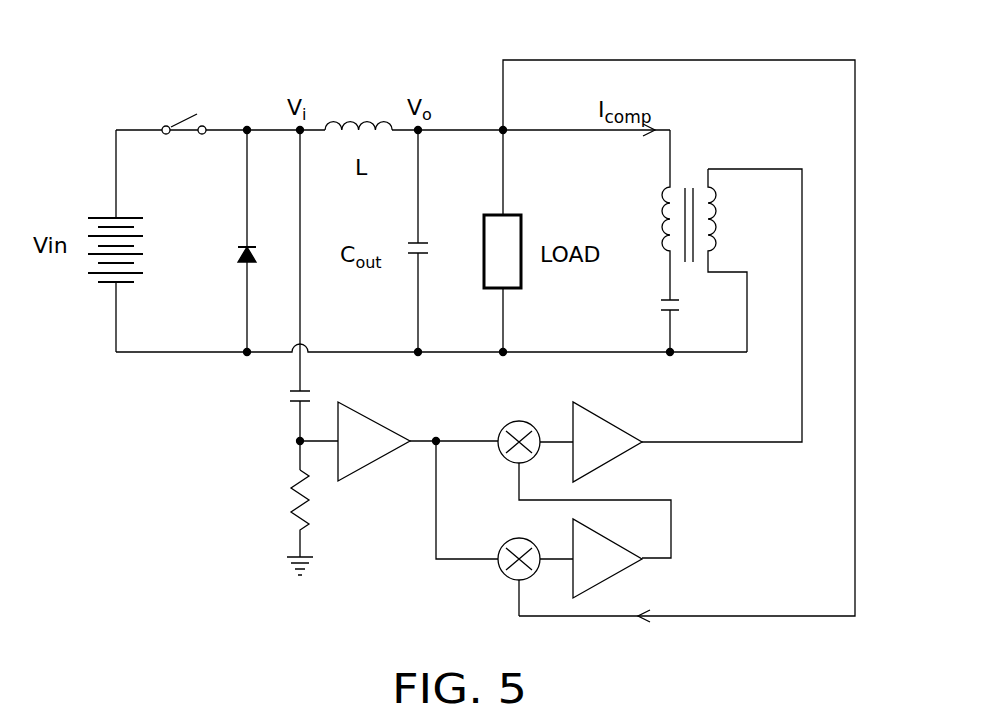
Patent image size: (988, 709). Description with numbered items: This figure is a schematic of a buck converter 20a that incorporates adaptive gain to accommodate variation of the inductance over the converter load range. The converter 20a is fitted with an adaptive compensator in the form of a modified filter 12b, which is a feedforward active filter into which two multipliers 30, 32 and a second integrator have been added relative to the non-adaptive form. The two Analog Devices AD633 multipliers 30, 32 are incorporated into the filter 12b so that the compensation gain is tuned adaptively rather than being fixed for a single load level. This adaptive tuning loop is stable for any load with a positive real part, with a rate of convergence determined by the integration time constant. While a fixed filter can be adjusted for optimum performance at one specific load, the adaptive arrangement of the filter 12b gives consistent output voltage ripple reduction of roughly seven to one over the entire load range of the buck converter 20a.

The buck converter 20a is at (805, 48).
The multiplier 30 is at (526, 423).
The multiplier 32 is at (505, 576).
The modified filter 12b is at (358, 625).